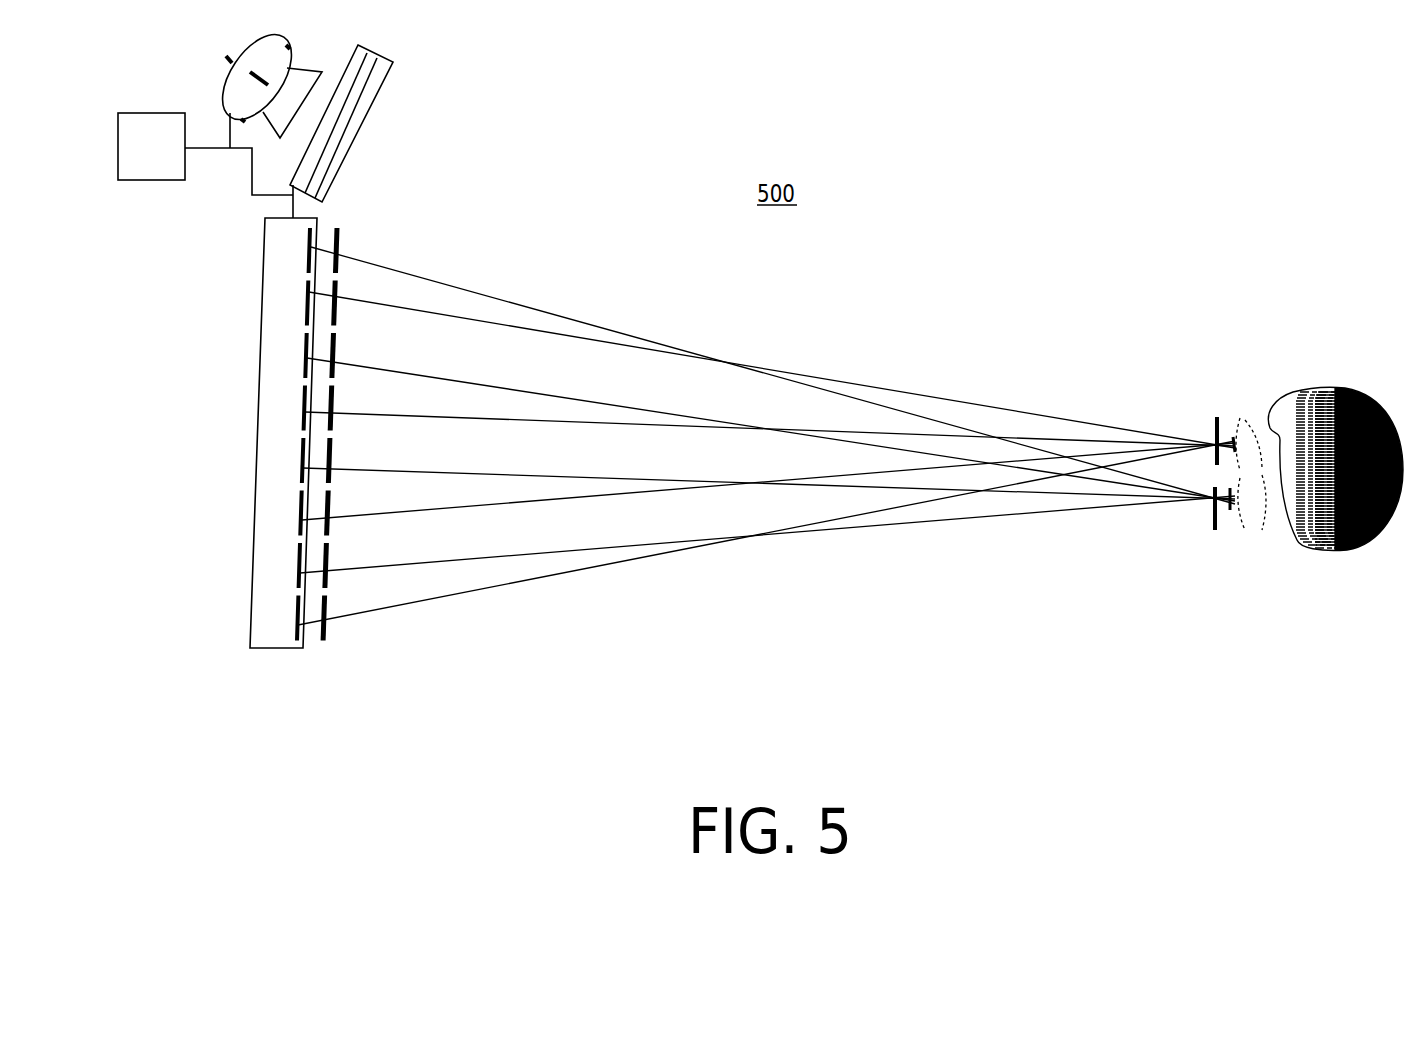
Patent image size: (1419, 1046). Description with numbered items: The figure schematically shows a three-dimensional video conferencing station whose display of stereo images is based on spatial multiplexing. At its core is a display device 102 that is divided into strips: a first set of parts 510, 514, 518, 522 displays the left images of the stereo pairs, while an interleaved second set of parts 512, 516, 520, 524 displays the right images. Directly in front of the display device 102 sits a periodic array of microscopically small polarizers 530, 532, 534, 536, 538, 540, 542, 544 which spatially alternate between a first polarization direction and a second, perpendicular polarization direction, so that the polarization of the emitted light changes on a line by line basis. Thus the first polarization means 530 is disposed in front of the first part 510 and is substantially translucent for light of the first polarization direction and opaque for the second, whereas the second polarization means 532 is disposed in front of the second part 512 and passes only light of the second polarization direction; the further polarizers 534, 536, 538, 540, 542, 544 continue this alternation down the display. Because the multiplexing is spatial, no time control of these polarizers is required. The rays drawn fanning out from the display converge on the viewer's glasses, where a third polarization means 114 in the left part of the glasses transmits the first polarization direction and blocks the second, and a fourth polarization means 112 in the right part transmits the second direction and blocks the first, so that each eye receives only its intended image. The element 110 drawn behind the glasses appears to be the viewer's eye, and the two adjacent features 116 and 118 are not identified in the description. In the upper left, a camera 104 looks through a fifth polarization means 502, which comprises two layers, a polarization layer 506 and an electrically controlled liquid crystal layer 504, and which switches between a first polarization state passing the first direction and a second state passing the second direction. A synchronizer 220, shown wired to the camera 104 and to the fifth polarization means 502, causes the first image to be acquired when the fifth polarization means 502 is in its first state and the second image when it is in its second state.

The display device 102 is at (265, 230).
The camera 104 is at (238, 90).
The eye 110 is at (1353, 390).
The fourth polarization means 112 is at (1217, 417).
The third polarization means 114 is at (1215, 530).
The upper lens portion 116 is at (1248, 422).
The lower lens portion 118 is at (1238, 490).
The synchronizer 220 is at (150, 115).
The fifth polarization means 502 is at (375, 120).
The electrically controlled LC layer 504 is at (367, 93).
The polarization layer 506 is at (343, 103).
The first part of the display device 510 is at (308, 253).
The second part of the display device 512 is at (308, 300).
The part of the display device 514 is at (307, 352).
The part of the display device 516 is at (307, 412).
The part of the display device 518 is at (302, 453).
The part of the display device 520 is at (302, 513).
The part of the display device 522 is at (297, 577).
The part of the display device 524 is at (293, 632).
The first polarization means 530 is at (337, 265).
The second polarization means 532 is at (337, 312).
The polarizer 534 is at (335, 367).
The polarizer 536 is at (333, 422).
The polarizer 538 is at (333, 473).
The polarizer 540 is at (330, 523).
The polarizer 542 is at (328, 575).
The polarizer 544 is at (327, 618).